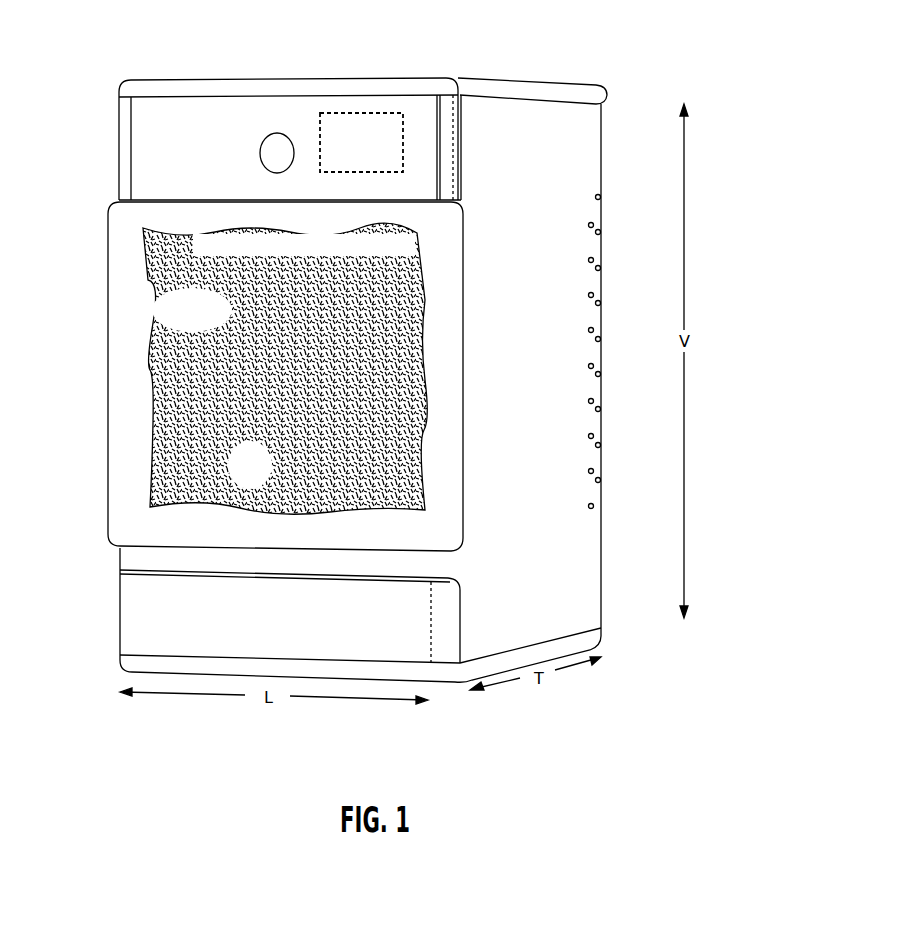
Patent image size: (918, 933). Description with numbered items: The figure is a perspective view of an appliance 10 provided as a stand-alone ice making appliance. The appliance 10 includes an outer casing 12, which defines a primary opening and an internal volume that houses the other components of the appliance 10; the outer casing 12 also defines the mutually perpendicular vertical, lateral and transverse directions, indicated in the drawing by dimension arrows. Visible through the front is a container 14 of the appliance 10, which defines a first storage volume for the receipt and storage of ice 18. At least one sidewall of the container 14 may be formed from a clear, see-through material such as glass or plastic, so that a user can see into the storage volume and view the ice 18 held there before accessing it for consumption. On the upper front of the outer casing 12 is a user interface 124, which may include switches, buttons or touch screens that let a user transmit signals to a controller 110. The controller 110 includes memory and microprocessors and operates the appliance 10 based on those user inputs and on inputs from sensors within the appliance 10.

The appliance 10 is at (731, 86).
The outer casing 12 is at (558, 185).
The container 14 is at (207, 334).
The ice 18 is at (152, 265).
The controller 110 is at (408, 125).
The user interface 124 is at (244, 153).